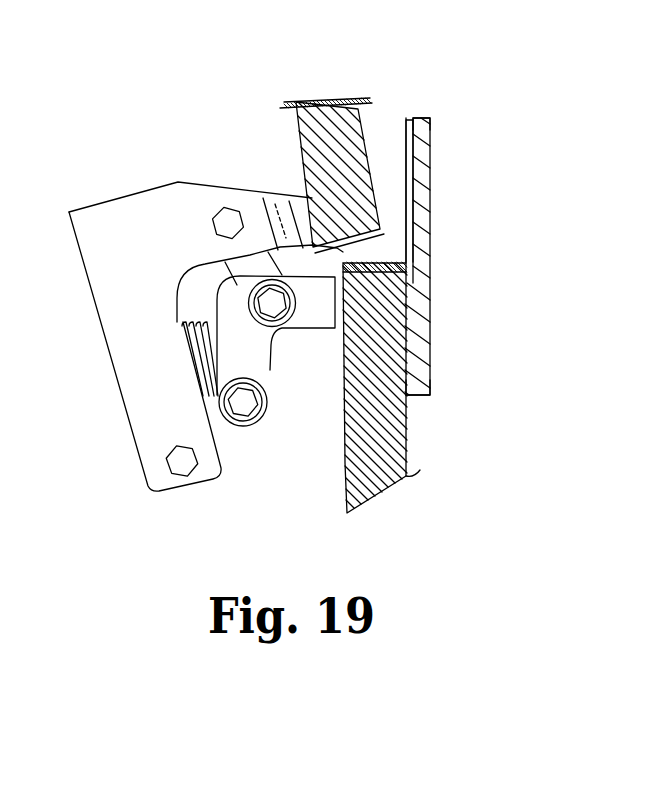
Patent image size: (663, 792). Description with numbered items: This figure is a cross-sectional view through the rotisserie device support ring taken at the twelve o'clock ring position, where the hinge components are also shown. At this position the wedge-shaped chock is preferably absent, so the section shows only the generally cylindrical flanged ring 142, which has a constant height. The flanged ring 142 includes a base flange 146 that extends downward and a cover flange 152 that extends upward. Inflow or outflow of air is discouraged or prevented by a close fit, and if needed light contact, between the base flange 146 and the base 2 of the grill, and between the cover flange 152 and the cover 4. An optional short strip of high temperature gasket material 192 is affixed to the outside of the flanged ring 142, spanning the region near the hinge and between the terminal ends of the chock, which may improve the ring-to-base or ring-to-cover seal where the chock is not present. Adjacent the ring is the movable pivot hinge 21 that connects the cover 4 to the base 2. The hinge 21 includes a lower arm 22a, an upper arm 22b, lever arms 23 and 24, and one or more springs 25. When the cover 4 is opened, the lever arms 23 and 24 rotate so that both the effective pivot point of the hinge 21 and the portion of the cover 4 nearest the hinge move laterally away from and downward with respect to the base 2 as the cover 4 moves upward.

The base 2 is at (347, 463).
The cover 4 is at (303, 138).
The movable pivot hinge 21 is at (105, 425).
The lower arm 22a is at (260, 353).
The upper arm 22b is at (145, 212).
The lever arm 23 is at (235, 440).
The lever arm 24 is at (252, 262).
The spring 25 is at (193, 332).
The flanged ring 142 is at (432, 300).
The base flange 146 is at (427, 402).
The cover flange 152 is at (422, 117).
The gasket material 192 is at (410, 165).